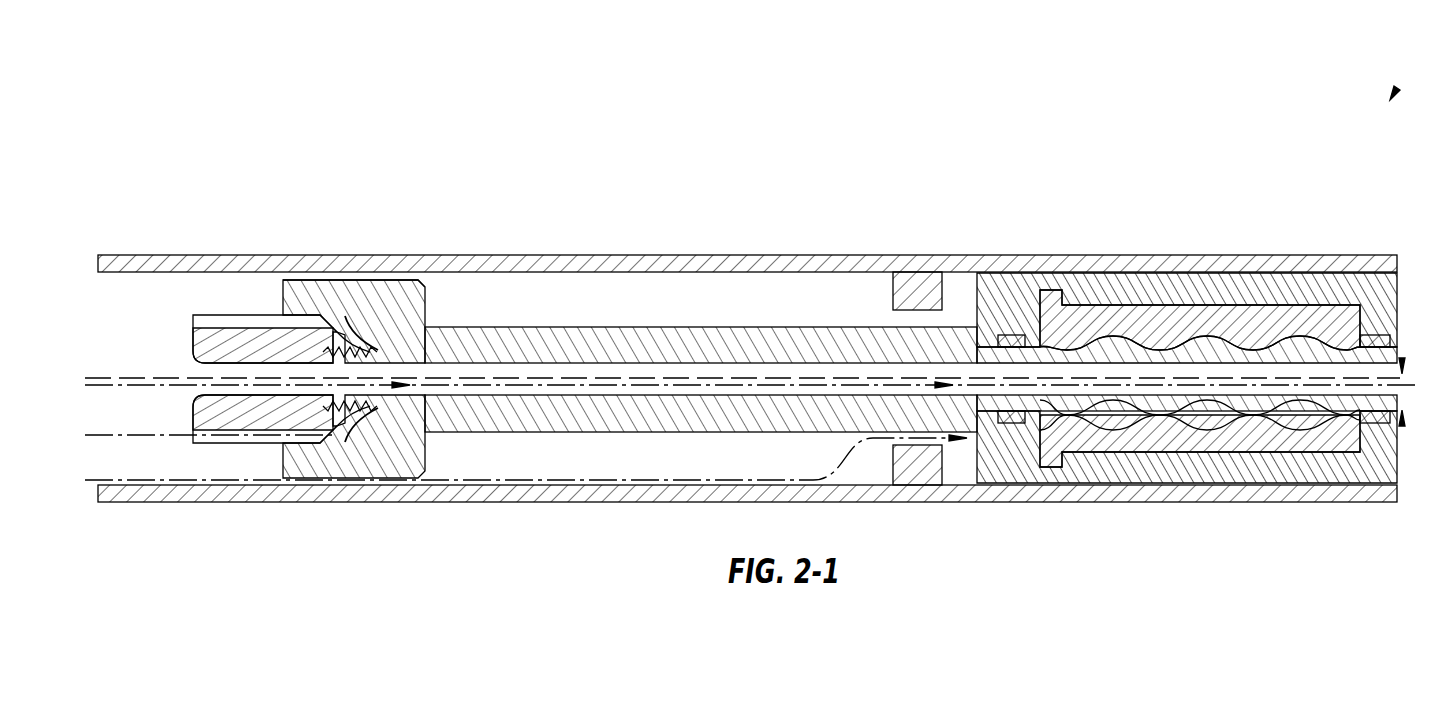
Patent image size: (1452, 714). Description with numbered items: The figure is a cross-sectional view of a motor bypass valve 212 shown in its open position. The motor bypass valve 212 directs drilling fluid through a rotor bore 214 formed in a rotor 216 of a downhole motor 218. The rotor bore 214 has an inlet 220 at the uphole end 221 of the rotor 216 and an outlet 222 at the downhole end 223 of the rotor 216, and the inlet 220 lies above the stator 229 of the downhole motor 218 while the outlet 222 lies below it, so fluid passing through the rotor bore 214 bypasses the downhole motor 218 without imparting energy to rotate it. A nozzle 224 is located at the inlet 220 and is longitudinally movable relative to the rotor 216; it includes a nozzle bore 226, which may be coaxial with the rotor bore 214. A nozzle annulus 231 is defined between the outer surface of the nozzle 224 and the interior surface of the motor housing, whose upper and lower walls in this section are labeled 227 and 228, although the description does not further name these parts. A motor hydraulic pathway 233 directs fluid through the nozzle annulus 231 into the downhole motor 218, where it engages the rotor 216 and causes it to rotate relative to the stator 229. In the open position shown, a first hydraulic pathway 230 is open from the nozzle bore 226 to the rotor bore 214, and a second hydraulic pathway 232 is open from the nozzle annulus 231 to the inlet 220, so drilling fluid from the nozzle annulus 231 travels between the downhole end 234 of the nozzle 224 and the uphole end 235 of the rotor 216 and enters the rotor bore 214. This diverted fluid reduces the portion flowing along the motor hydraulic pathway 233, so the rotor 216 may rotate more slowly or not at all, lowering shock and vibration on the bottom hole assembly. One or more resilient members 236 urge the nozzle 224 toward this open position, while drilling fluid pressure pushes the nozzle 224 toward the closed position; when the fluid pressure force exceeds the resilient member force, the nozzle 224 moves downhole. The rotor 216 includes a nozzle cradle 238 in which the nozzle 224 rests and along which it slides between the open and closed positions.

The motor bypass valve 212 is at (1396, 89).
The rotor bore 214 is at (468, 365).
The rotor 216 is at (582, 346).
The downhole motor 218 is at (1208, 248).
The inlet 220 is at (345, 318).
The uphole end 221 is at (387, 308).
The outlet 222 is at (1402, 360).
The downhole end 223 is at (1402, 424).
The nozzle 224 is at (242, 336).
The nozzle bore 226 is at (290, 396).
The outer tube 227 is at (138, 378).
The outer tube wall 228 is at (520, 500).
The stator 229 is at (1220, 438).
The first hydraulic pathway 230 is at (190, 383).
The nozzle annulus 231 is at (243, 457).
The second hydraulic pathway 232 is at (130, 435).
The motor hydraulic pathway 233 is at (852, 445).
The downhole end 234 is at (330, 333).
The uphole end 235 is at (373, 438).
The resilient member 236 is at (357, 438).
The nozzle cradle 238 is at (378, 286).